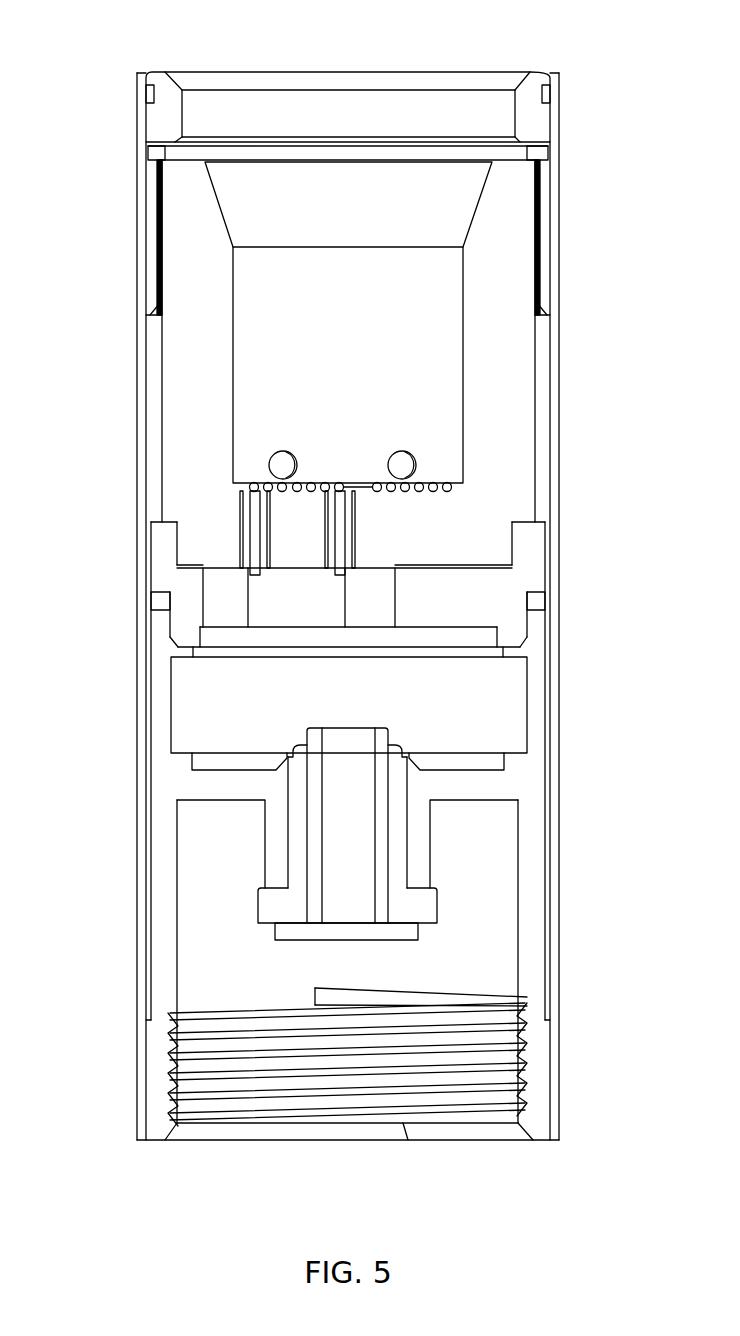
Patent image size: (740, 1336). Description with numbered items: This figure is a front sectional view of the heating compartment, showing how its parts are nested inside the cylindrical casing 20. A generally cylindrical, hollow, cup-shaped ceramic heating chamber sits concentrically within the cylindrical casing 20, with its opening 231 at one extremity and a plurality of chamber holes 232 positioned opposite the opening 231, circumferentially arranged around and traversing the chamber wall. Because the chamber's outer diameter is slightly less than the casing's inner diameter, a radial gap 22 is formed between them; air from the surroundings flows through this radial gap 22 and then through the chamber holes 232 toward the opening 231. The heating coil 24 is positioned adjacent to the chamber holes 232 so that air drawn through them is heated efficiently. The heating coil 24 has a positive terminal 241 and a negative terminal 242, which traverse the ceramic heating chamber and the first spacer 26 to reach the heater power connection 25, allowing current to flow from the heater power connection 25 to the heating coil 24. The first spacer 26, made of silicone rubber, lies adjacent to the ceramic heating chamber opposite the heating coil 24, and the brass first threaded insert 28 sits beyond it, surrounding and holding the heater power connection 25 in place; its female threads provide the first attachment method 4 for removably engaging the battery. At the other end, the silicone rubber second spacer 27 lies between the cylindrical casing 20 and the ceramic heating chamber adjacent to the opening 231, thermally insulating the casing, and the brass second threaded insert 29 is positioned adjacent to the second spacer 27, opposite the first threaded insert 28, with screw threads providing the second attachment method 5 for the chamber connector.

The first attachment method 4 is at (502, 1032).
The second attachment method 5 is at (462, 102).
The cylindrical casing 20 is at (136, 500).
The radial gap 22 is at (153, 427).
The heating coil 24 is at (362, 484).
The heater power connection 25 is at (275, 924).
The first spacer 26 is at (540, 563).
The second spacer 27 is at (543, 156).
The first threaded insert 28 is at (540, 750).
The second threaded insert 29 is at (543, 110).
The opening 231 is at (333, 182).
The chamber holes 232 is at (288, 458).
The positive terminal 241 is at (338, 532).
The negative terminal 242 is at (253, 563).